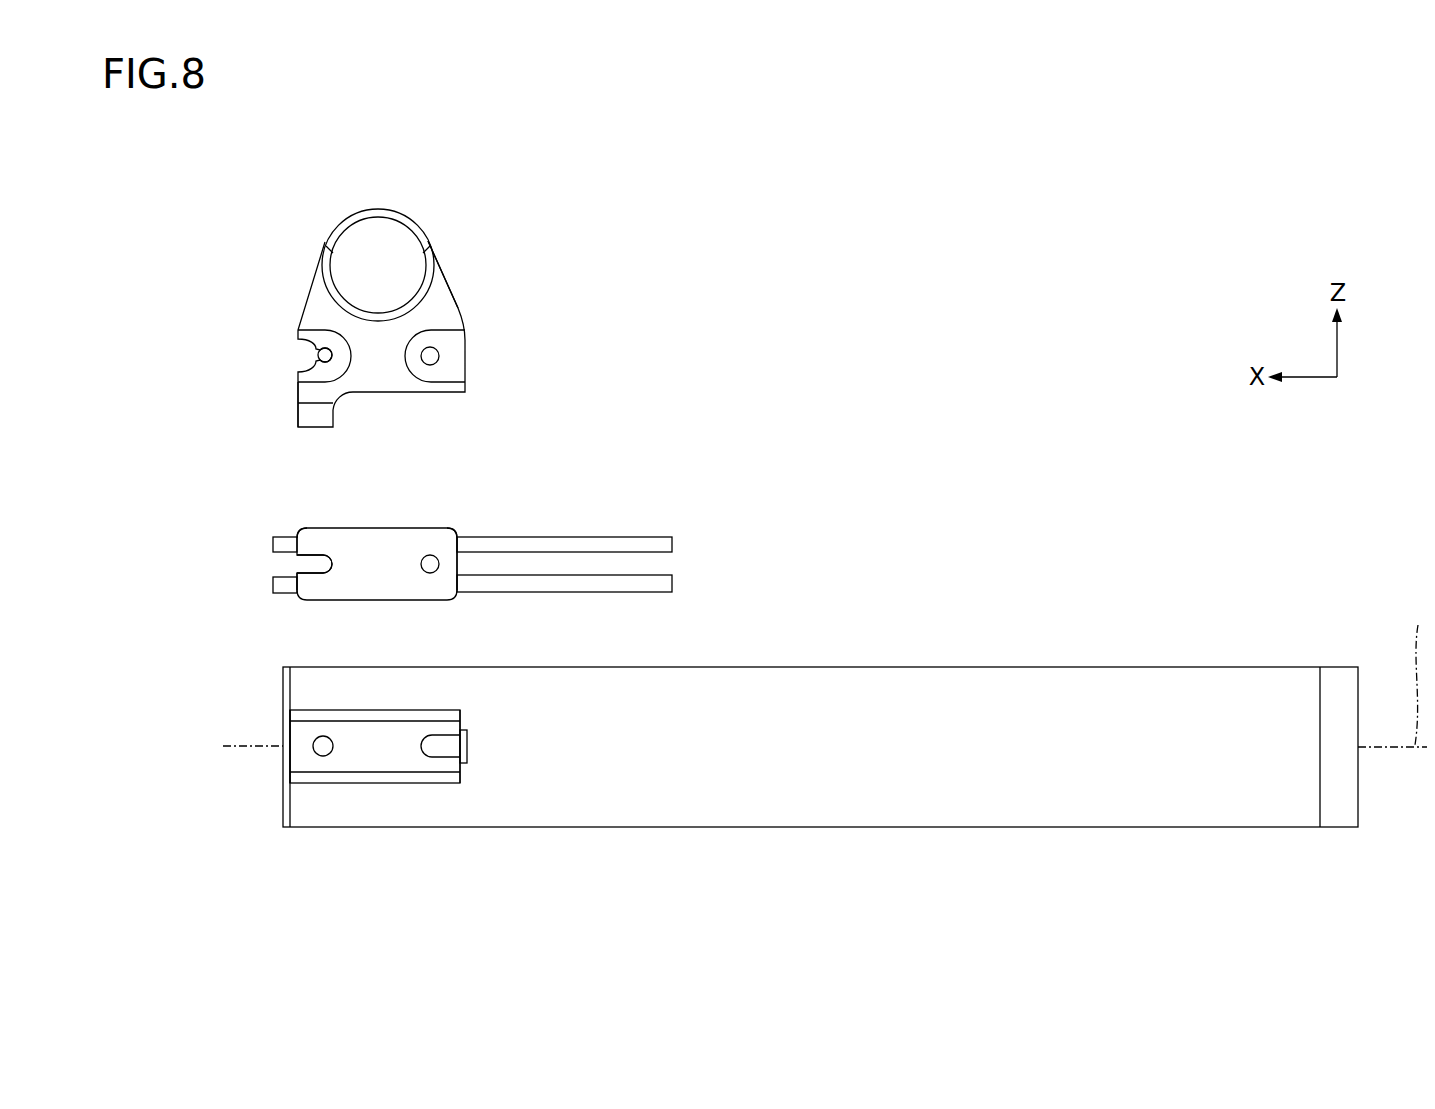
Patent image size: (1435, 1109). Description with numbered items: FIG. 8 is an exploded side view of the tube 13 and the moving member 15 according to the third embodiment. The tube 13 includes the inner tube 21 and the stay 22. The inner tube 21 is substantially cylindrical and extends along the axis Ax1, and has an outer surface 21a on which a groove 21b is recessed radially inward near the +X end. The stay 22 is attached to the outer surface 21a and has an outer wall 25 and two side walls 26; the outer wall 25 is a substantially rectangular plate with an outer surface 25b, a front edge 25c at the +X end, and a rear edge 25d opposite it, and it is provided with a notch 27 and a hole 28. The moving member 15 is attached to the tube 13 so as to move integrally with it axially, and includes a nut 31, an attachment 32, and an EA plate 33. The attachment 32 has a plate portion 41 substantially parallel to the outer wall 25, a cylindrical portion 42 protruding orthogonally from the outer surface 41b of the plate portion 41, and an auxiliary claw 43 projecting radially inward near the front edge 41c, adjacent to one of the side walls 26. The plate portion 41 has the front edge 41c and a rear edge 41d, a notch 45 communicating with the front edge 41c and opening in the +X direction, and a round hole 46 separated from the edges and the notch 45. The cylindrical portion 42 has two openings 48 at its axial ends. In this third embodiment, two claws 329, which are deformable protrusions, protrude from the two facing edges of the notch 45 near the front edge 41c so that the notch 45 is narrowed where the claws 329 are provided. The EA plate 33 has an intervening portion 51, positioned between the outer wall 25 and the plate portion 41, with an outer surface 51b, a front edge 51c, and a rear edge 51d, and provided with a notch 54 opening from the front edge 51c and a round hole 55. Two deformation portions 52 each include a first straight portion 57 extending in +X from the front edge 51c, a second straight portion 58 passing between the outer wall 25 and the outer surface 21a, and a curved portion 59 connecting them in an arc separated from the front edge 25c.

The tube 13 is at (1218, 657).
The moving member 15 is at (470, 223).
The inner tube 21 is at (828, 710).
The outer surface 21a is at (1039, 682).
The groove 21b is at (463, 743).
The stay 22 is at (339, 764).
The outer wall 25 is at (339, 764).
The outer surface 25b is at (373, 758).
The front edge 25c is at (283, 758).
The rear edge 25d is at (463, 777).
The side wall 26 is at (352, 710).
The notch 27 is at (420, 745).
The hole 28 is at (313, 745).
The nut 31 is at (382, 242).
The attachment 32 is at (460, 303).
The claw 329 is at (320, 358).
The EA plate 33 is at (430, 528).
The plate portion 41 is at (369, 346).
The outer surface 41b is at (378, 368).
The front edge 41c is at (298, 383).
The rear edge 41d is at (467, 337).
The cylindrical portion 42 is at (420, 223).
The auxiliary claw 43 is at (307, 418).
The notch 45 is at (318, 338).
The hole 46 is at (438, 355).
The opening 48 is at (325, 245).
The intervening portion 51 is at (416, 549).
The outer surface 51b is at (372, 547).
The front edge 51c is at (302, 532).
The rear edge 51d is at (463, 555).
The deformation portion 52 is at (228, 575).
The notch 54 is at (312, 569).
The hole 55 is at (436, 571).
The first straight portion 57 is at (295, 567).
The second straight portion 58 is at (632, 543).
The curved portion 59 is at (273, 540).
The axis Ax1 is at (828, 670).